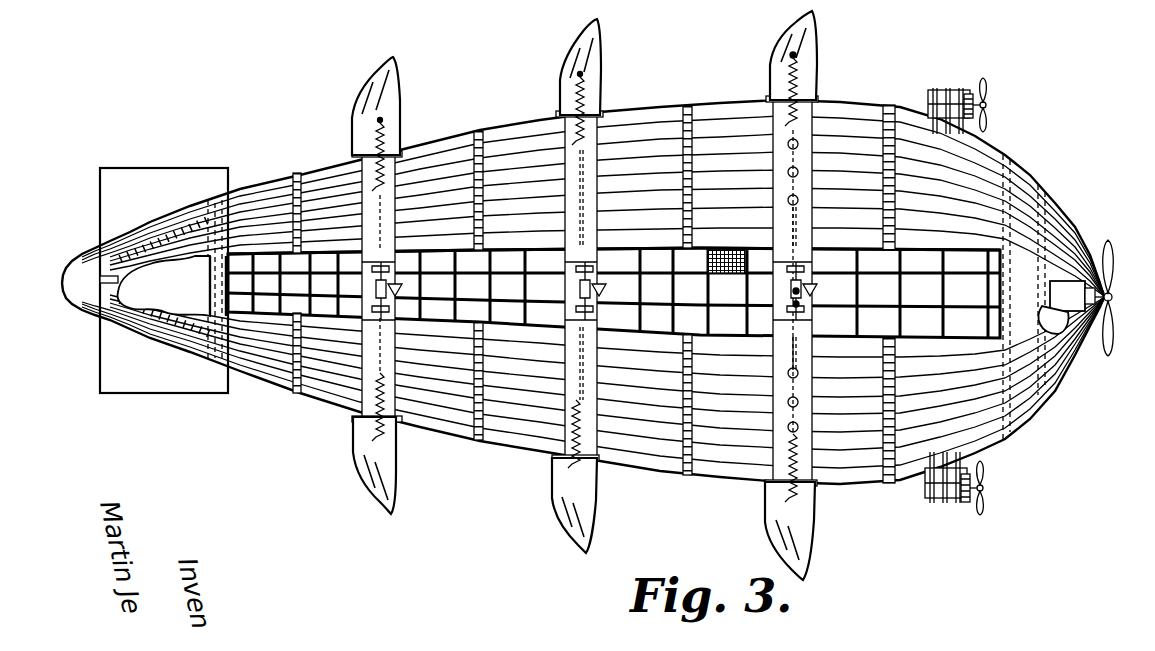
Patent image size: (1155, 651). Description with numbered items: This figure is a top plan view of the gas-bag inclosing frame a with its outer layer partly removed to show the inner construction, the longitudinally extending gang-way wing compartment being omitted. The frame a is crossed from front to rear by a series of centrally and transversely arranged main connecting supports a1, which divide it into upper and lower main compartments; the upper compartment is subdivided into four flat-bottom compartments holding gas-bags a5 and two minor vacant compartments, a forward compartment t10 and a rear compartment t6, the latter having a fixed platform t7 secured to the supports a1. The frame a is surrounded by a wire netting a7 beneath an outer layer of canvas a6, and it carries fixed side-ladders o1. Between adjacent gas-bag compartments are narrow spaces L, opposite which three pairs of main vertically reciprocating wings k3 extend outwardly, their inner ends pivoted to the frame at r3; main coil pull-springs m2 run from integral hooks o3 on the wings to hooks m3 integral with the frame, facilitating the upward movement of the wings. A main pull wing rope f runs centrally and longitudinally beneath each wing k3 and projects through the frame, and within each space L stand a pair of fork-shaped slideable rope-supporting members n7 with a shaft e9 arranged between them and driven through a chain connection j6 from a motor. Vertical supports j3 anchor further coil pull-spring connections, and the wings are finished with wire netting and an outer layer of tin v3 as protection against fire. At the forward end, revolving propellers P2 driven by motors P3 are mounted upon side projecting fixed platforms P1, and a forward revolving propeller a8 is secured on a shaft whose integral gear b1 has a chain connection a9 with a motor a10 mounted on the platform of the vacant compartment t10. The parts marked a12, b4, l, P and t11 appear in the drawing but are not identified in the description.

The gas-bag inclosing frame a is at (614, 293).
The main connecting supports a1 is at (222, 230).
The gas-bags a5 is at (264, 268).
The outer layer of canvas a6 is at (607, 347).
The wire netting a7 is at (728, 274).
The revolving propeller a8 is at (1110, 256).
The chain connection a9 is at (1050, 294).
The motor a10 is at (1042, 326).
The spring cap a12 is at (790, 60).
The integral gear b1 is at (1055, 230).
The chain links b4 is at (788, 146).
The shaft e9 is at (795, 300).
The main pull wing rope f is at (588, 183).
The vertical supports j3 is at (796, 280).
The chain connection j6 is at (392, 284).
The main vertically reciprocating wings k3 is at (592, 50).
The bracket l is at (372, 265).
The narrow space L is at (806, 266).
The main coil pull-spring connections m2 is at (583, 103).
The hooks m3 is at (386, 378).
The fork shaped slideable members n7 is at (390, 266).
The fixed side-ladders o1 is at (895, 185).
The integral hooks o3 is at (386, 120).
The motor housing P is at (928, 100).
The side projecting fixed platforms P1 is at (940, 90).
The revolving propellers P2 is at (986, 82).
The motors P3 is at (968, 94).
The pivotal connections r3 is at (562, 117).
The minor vacant compartment t6 is at (190, 300).
The fixed platform t7 is at (168, 268).
The minor vacant compartment t10 is at (1053, 310).
The nose fitting t11 is at (105, 287).
The outer layers of tin v3 is at (600, 292).